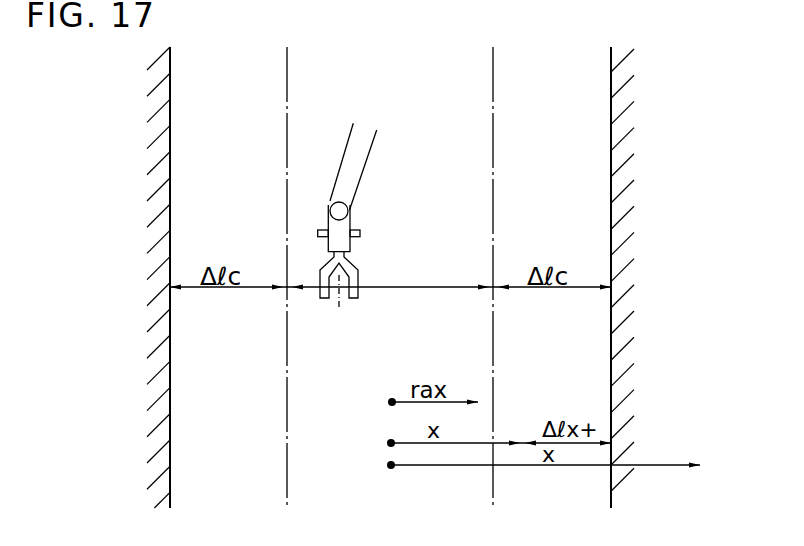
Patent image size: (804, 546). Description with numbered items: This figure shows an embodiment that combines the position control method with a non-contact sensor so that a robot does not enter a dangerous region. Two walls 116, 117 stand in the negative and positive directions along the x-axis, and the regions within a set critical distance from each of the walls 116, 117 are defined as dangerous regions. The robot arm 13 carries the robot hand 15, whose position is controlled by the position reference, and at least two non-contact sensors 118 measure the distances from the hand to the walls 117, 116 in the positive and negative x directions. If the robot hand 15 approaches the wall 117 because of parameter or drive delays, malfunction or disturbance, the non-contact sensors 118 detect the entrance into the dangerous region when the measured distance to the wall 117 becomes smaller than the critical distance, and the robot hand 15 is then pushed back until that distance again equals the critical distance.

The wall 116 is at (172, 64).
The wall 117 is at (610, 71).
The robot arm 13 is at (342, 164).
The non-contact sensor 118 is at (360, 232).
The robot hand 15 is at (350, 300).